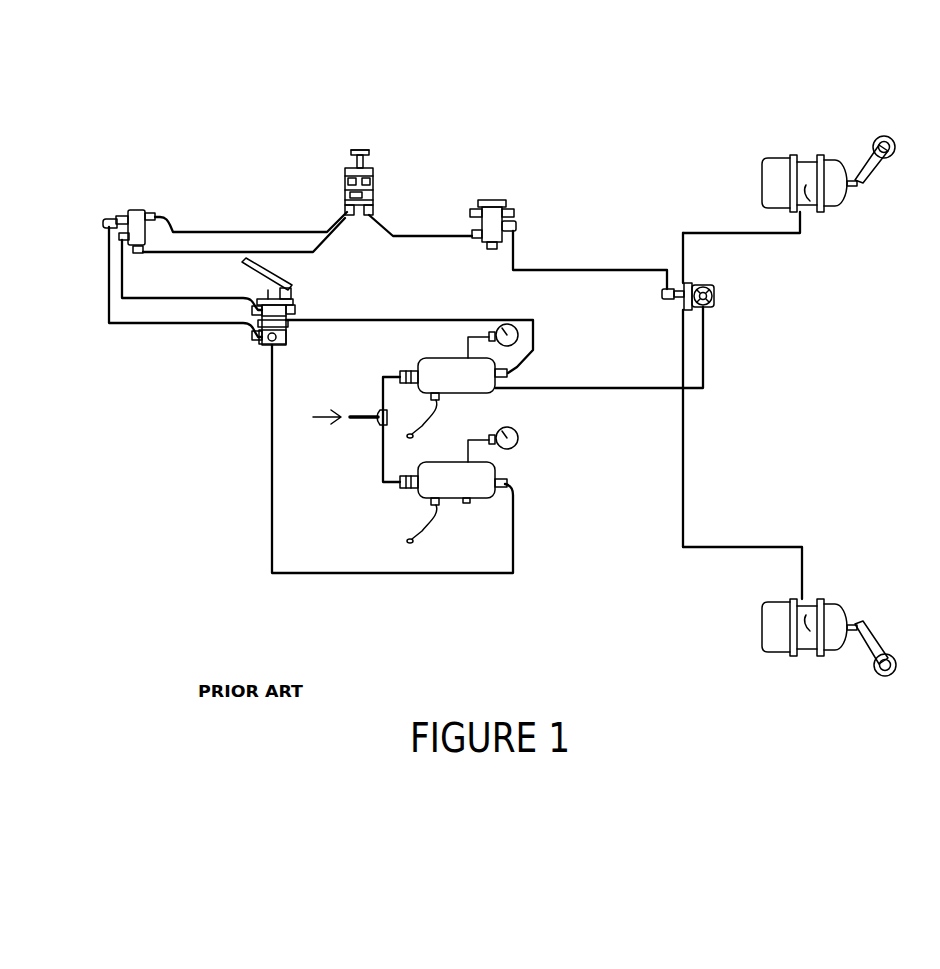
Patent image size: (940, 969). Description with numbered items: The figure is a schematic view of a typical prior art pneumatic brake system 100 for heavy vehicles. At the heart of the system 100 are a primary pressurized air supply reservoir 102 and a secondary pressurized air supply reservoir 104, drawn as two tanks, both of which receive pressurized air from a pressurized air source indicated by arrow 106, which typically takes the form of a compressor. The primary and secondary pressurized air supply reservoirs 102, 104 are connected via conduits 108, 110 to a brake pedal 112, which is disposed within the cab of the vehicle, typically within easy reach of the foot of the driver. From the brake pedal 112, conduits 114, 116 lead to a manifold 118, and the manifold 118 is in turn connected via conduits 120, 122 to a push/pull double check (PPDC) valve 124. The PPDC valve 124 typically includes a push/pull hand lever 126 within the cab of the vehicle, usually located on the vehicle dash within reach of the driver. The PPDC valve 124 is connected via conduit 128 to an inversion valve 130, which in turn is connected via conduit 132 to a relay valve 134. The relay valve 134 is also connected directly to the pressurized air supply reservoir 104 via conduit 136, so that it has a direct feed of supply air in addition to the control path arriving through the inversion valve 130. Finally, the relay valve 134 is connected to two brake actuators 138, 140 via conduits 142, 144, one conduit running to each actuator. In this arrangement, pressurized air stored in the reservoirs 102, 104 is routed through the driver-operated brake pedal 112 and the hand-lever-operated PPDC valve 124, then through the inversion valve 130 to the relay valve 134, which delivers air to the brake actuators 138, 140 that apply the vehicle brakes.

The pneumatic brake system 100 is at (603, 147).
The primary pressurized air supply reservoir 102 is at (490, 381).
The secondary pressurized air supply reservoir 104 is at (492, 485).
The arrow indicating pressurized air source 106 is at (350, 433).
The conduit 108 is at (409, 322).
The conduit 110 is at (392, 487).
The brake pedal 112 is at (301, 301).
The conduit 114 is at (192, 275).
The conduit 116 is at (185, 311).
The manifold 118 is at (129, 196).
The conduit 120 is at (267, 239).
The conduit 122 is at (251, 201).
The push/pull double check (PPDC) valve 124 is at (399, 182).
The push/pull hand lever 126 is at (382, 124).
The conduit 128 is at (420, 215).
The inversion valve 130 is at (520, 217).
The conduit 132 is at (590, 254).
The relay valve 134 is at (744, 390).
The conduit 136 is at (599, 347).
The brake actuator 138 is at (828, 157).
The brake actuator 140 is at (829, 656).
The conduit 142 is at (778, 234).
The conduit 144 is at (747, 549).